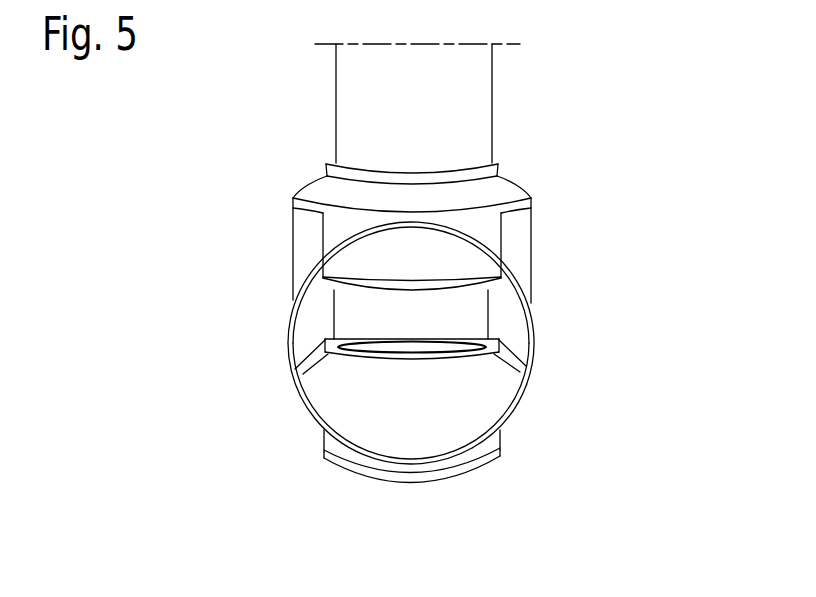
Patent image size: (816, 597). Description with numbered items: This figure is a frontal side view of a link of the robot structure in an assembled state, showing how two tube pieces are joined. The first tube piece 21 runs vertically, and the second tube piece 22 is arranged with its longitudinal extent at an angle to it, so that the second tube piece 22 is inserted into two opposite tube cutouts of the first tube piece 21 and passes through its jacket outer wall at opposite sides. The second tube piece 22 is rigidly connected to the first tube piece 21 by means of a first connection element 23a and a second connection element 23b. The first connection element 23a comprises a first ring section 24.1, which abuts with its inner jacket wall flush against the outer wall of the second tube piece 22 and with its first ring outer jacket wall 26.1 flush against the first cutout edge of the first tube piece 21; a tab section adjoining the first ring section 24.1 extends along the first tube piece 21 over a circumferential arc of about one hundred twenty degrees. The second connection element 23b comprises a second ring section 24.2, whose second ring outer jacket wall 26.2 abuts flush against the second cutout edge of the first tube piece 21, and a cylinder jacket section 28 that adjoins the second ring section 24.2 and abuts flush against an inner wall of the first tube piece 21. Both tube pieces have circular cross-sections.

The first tube piece 21 is at (495, 88).
The first connection element 23a is at (543, 203).
The second connection element 23b is at (332, 387).
The first ring section 24.1 is at (364, 286).
The second ring section 24.2 is at (460, 482).
The second tube piece 22 is at (537, 335).
The first ring outer jacket wall 26.1 is at (378, 252).
The second ring outer jacket wall 26.2 is at (495, 438).
The cylinder jacket section 28 is at (517, 402).